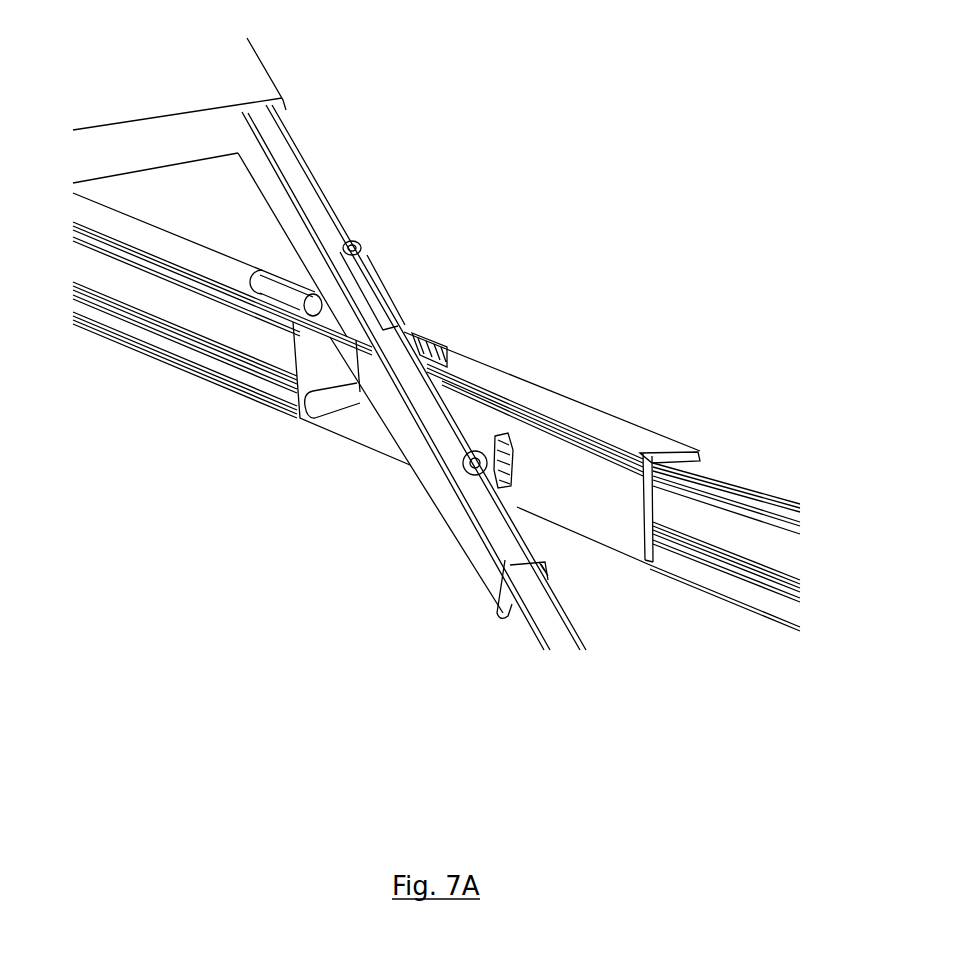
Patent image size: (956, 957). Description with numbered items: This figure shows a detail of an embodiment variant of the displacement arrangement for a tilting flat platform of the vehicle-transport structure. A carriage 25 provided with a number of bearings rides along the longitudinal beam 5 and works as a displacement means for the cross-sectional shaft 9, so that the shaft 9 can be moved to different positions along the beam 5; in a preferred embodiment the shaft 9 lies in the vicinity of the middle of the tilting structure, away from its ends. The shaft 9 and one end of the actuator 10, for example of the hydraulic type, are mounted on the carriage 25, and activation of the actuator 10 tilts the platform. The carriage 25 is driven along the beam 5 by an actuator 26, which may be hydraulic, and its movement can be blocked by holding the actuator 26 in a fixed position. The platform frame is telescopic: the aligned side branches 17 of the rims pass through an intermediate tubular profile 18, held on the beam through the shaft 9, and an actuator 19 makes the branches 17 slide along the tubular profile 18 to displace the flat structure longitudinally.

The longitudinal beam 5 is at (220, 327).
The cross-sectional shaft 9 is at (502, 443).
The actuator 10 is at (327, 402).
The side branch 17 is at (298, 177).
The intermediate tubular profile 18 is at (473, 552).
The actuator 19 is at (462, 390).
The carriage 25 is at (570, 485).
The actuator 26 is at (162, 245).